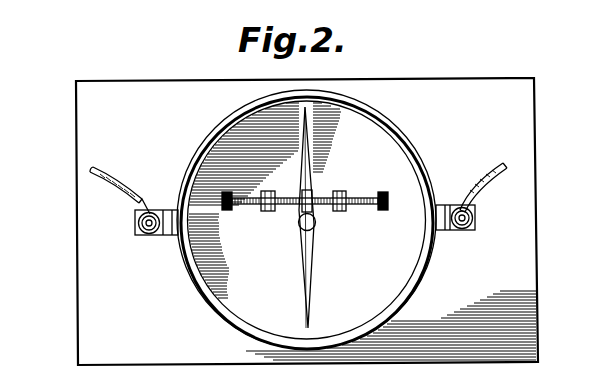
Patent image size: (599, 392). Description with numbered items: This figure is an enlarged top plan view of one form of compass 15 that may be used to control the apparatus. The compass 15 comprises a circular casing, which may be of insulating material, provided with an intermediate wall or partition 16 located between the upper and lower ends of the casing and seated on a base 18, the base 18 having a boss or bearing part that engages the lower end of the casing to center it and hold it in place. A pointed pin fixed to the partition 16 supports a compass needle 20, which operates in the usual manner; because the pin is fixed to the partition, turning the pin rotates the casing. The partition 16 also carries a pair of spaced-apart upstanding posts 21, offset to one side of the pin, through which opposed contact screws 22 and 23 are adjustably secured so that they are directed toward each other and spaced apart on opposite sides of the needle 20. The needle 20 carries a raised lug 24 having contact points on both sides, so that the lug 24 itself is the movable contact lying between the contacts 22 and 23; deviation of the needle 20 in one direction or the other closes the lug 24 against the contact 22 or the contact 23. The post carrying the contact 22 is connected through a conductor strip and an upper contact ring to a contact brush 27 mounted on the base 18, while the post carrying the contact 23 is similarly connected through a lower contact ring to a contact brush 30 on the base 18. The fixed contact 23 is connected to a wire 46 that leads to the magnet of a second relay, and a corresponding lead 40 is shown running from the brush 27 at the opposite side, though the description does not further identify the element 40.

The compass 15 is at (428, 164).
The intermediate wall or partition 16 is at (397, 274).
The base 18 is at (534, 255).
The compass needle 20 is at (313, 292).
The upstanding posts 21 is at (277, 186).
The contact screw 22 is at (250, 213).
The contact screw 23 is at (365, 210).
The raised lug 24 is at (313, 193).
The contact brush 27 is at (163, 209).
The contact brush 30 is at (445, 231).
The left wire 40 is at (92, 182).
The wire 46 is at (508, 168).